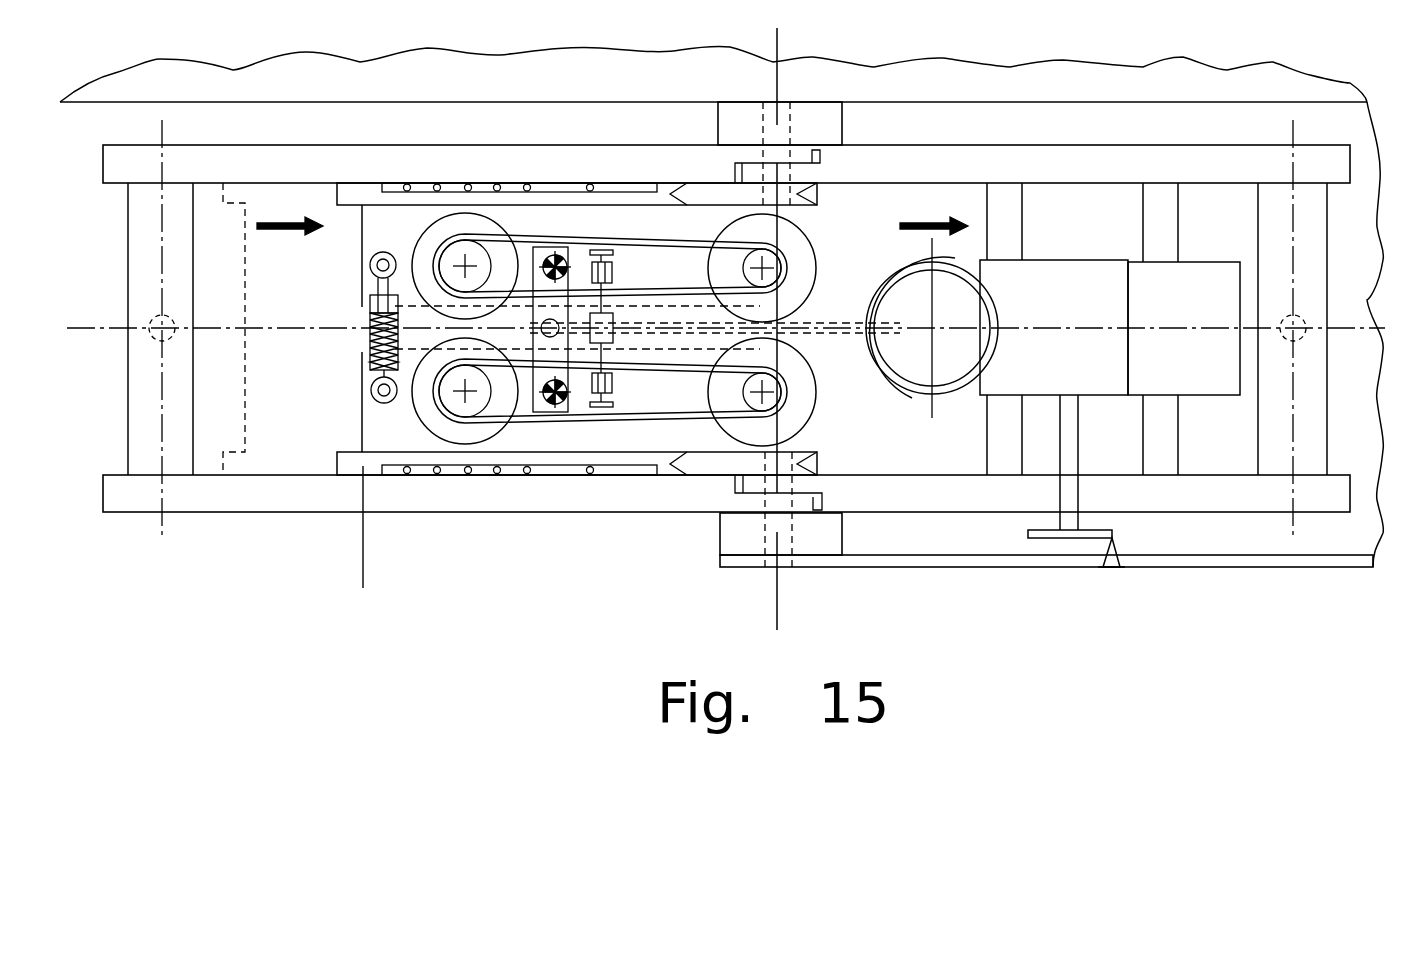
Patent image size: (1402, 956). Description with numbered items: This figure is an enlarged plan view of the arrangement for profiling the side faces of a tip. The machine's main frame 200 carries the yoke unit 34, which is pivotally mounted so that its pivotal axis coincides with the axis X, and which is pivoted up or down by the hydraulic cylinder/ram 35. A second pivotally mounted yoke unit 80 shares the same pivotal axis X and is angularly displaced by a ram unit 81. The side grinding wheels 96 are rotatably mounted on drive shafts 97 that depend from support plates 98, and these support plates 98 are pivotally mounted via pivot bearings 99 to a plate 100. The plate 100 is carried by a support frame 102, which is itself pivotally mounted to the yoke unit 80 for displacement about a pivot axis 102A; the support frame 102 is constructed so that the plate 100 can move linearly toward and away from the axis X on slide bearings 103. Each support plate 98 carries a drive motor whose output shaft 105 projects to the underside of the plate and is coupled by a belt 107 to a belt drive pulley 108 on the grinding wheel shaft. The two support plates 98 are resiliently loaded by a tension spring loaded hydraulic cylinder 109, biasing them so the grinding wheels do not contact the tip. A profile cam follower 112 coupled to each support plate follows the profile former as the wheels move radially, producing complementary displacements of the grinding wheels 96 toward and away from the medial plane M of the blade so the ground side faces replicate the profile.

The yoke unit 34 is at (1148, 495).
The hydraulic cylinder/ram 35 is at (1302, 340).
The second pivotally mounted yoke unit 80 is at (280, 493).
The ram unit 81 is at (158, 338).
The side grinding wheels 96 is at (813, 247).
The drive shafts 97 is at (767, 270).
The support plates 98 is at (388, 230).
The pivot bearings 99 is at (567, 243).
The plate 100 is at (537, 247).
The support frame 102 is at (512, 478).
The pivot axis 102A is at (363, 552).
The slide bearings 103 is at (392, 183).
The output shaft 105 is at (465, 392).
The belt 107 is at (603, 230).
The belt drive pulley 108 is at (788, 405).
The tension spring loaded hydraulic cylinder 109 is at (370, 338).
The profile cam follower 112 is at (628, 247).
The main frame 200 is at (1023, 87).
The pivotal axis X is at (778, 78).
The medial plane M is at (1370, 317).